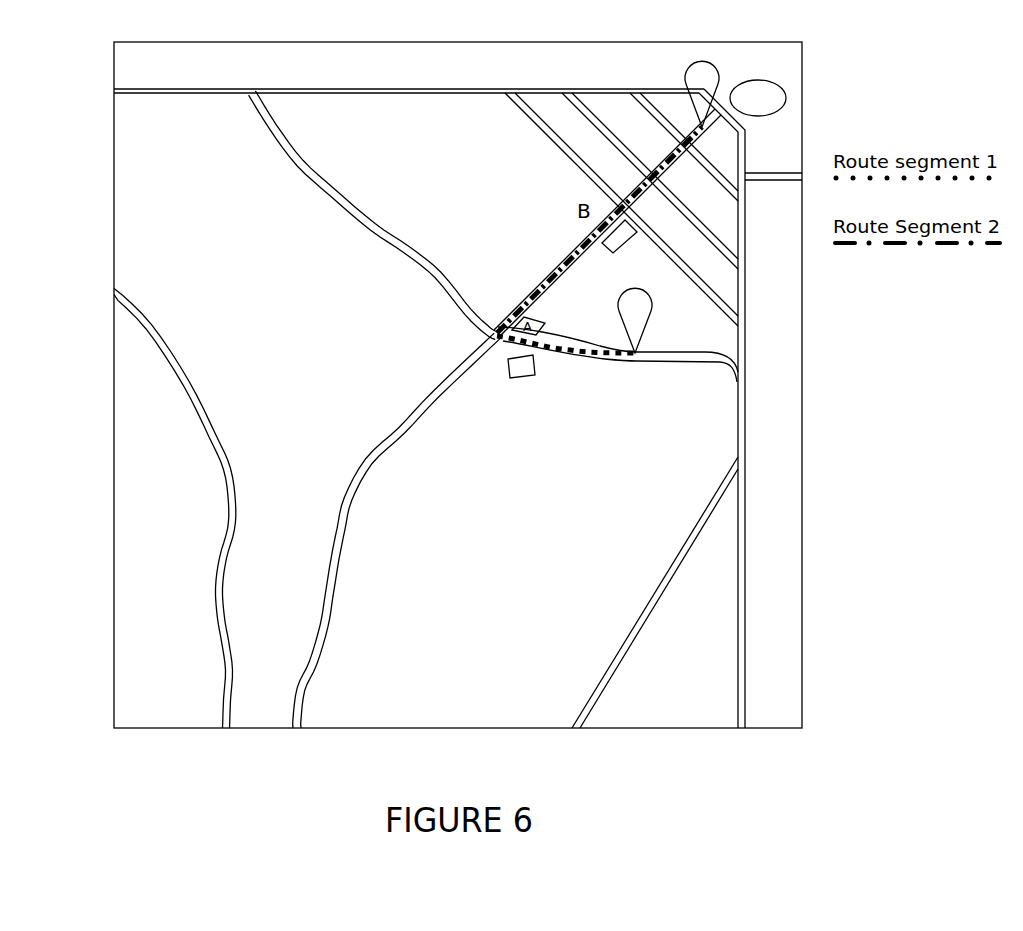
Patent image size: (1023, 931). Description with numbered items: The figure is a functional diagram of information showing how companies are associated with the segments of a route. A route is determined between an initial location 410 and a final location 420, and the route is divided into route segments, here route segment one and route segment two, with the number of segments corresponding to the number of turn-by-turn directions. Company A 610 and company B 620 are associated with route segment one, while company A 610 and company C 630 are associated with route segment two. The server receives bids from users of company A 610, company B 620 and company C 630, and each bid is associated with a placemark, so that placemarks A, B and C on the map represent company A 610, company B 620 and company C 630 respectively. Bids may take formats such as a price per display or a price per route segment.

The initial location 410 is at (652, 320).
The final location 420 is at (719, 77).
The company A 610 is at (640, 355).
The company B 620 is at (537, 368).
The company C 630 is at (637, 240).